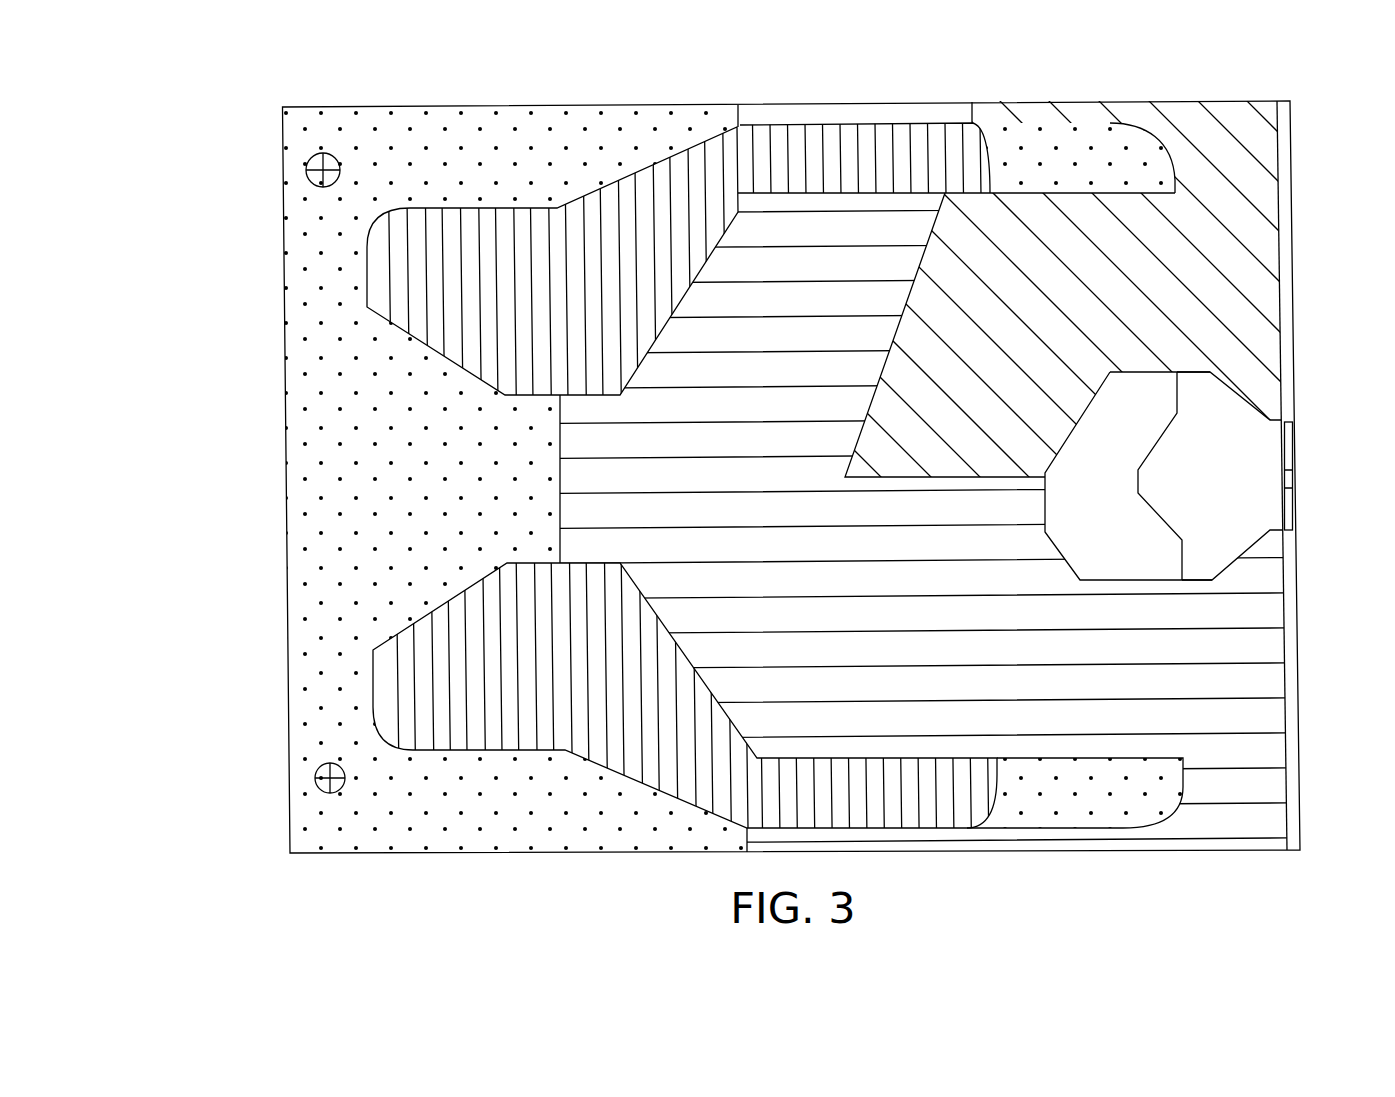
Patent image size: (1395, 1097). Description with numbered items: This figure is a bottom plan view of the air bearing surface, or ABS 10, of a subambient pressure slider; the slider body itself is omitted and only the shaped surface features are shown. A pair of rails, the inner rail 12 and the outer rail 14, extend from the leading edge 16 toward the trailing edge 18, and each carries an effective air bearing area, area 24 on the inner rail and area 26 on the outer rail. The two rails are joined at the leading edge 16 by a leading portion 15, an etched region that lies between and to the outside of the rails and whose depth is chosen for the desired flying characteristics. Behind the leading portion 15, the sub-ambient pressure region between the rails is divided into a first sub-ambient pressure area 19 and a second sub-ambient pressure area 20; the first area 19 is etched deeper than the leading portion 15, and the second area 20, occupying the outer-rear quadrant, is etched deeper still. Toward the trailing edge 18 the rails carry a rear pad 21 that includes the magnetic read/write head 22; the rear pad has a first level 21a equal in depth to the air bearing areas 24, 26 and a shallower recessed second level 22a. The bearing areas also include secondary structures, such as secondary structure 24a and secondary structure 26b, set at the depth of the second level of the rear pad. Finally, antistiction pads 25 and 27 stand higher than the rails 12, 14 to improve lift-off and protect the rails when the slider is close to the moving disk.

The air bearing surface (ABS) 10 is at (165, 167).
The inner rail 12 is at (438, 737).
The outer rail 14 is at (450, 223).
The leading portion 15 is at (390, 484).
The leading edge 16 is at (287, 510).
The trailing edge 18 is at (1297, 590).
The first sub-ambient pressure area 19 is at (723, 559).
The second sub-ambient pressure area 20 is at (983, 354).
The rear pad 21 is at (1250, 392).
The first level of rear pad 21a is at (1188, 496).
The magnetic read/write head 22 is at (1293, 463).
The second level of rear pad 22a is at (1070, 496).
The effective air bearing area 24 is at (517, 604).
The secondary structure 24a is at (1053, 807).
The antistiction pad 25 is at (306, 170).
The effective air bearing area 26 is at (515, 371).
The upper magnet end portion 26b is at (1046, 169).
The antistiction pad 27 is at (315, 777).